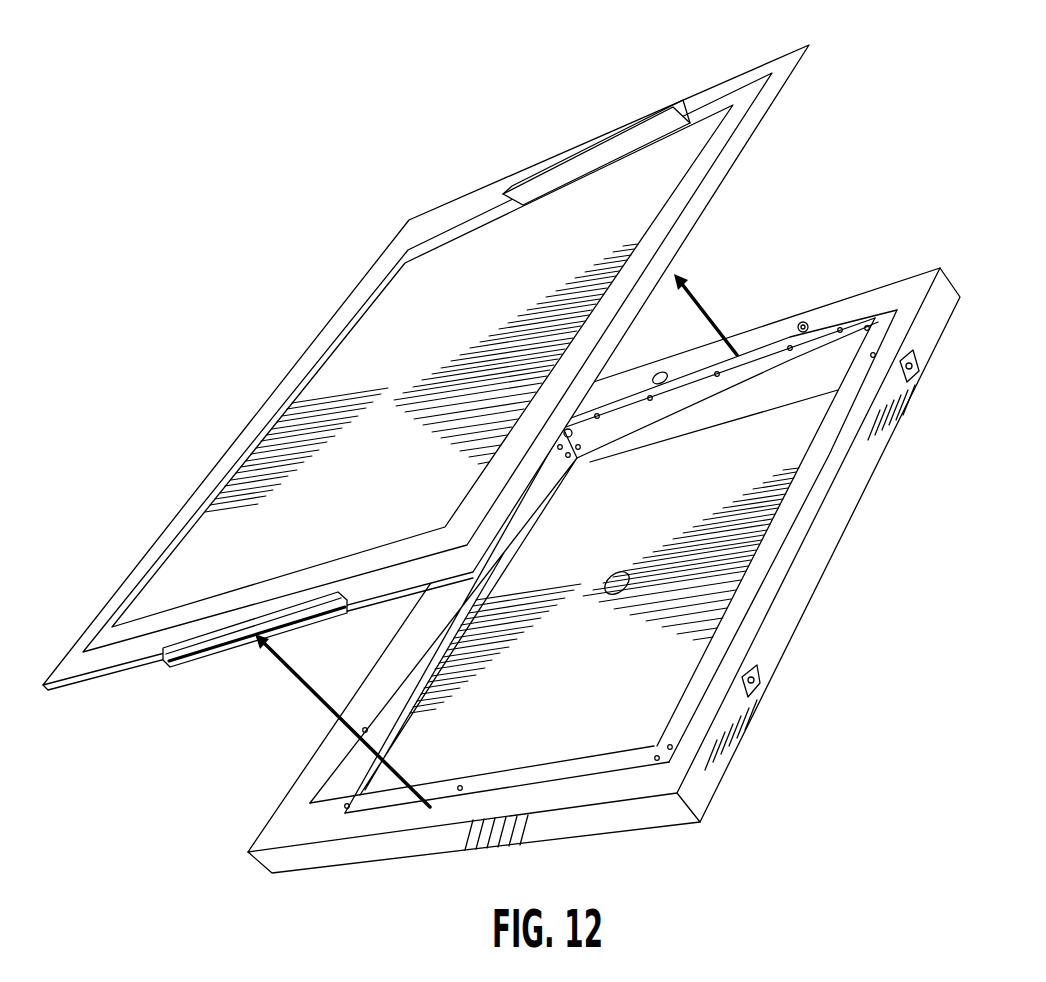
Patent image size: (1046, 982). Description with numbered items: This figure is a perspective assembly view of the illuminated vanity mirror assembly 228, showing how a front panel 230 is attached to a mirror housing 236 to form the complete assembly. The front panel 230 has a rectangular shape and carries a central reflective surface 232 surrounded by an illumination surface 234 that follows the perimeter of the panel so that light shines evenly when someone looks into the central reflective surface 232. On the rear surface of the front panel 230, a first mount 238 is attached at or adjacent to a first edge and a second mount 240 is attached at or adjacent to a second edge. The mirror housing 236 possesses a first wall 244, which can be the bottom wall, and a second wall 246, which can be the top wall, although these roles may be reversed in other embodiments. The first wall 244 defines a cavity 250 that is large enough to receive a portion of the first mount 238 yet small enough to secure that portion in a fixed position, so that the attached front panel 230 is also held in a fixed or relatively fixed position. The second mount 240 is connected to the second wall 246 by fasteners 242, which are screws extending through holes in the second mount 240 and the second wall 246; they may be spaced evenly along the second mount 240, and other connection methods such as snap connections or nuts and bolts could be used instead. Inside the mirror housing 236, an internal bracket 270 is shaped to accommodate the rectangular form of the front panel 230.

The illuminated vanity mirror assembly 228 is at (224, 290).
The front panel 230 is at (194, 486).
The central reflective surface 232 is at (330, 386).
The illumination surface 234 is at (392, 287).
The mirror housing 236 is at (804, 594).
The first mount 238 is at (231, 668).
The second mount 240 is at (586, 138).
The fasteners 242 is at (798, 324).
The first wall 244 is at (624, 820).
The second wall 246 is at (860, 293).
The cavity 250 is at (390, 835).
The internal bracket 270 is at (812, 482).